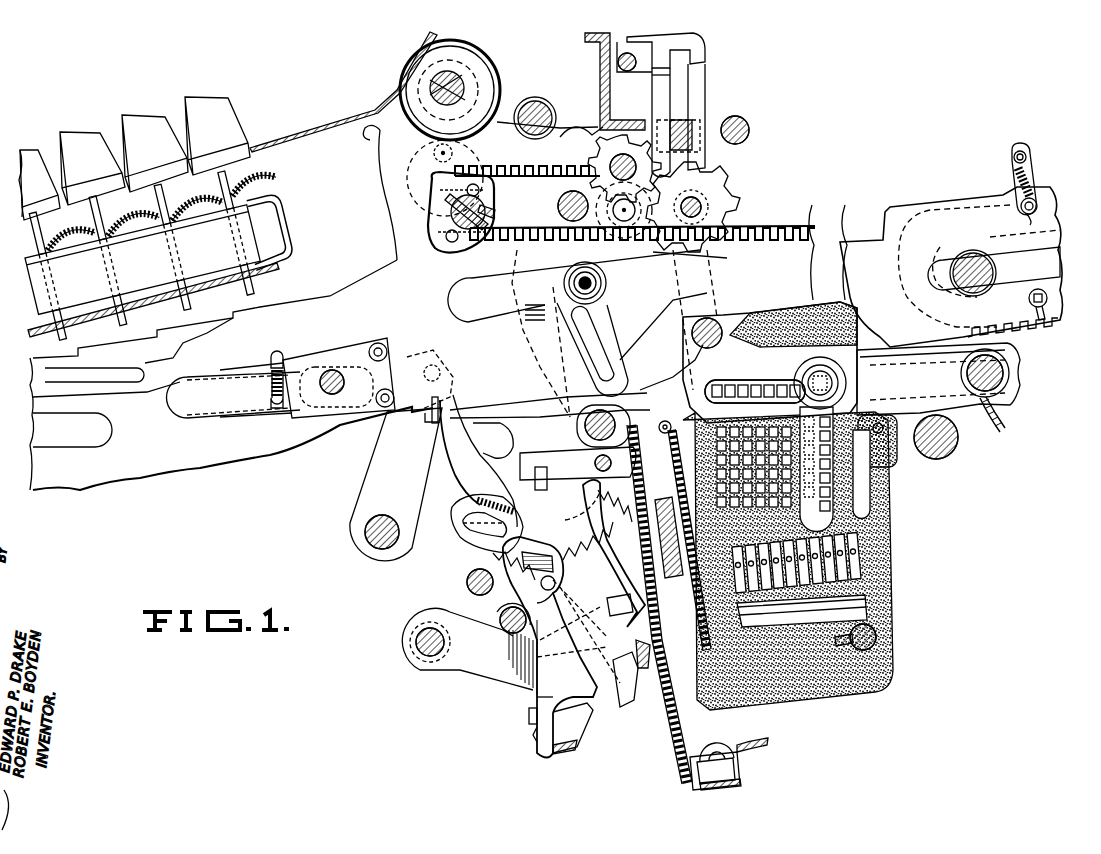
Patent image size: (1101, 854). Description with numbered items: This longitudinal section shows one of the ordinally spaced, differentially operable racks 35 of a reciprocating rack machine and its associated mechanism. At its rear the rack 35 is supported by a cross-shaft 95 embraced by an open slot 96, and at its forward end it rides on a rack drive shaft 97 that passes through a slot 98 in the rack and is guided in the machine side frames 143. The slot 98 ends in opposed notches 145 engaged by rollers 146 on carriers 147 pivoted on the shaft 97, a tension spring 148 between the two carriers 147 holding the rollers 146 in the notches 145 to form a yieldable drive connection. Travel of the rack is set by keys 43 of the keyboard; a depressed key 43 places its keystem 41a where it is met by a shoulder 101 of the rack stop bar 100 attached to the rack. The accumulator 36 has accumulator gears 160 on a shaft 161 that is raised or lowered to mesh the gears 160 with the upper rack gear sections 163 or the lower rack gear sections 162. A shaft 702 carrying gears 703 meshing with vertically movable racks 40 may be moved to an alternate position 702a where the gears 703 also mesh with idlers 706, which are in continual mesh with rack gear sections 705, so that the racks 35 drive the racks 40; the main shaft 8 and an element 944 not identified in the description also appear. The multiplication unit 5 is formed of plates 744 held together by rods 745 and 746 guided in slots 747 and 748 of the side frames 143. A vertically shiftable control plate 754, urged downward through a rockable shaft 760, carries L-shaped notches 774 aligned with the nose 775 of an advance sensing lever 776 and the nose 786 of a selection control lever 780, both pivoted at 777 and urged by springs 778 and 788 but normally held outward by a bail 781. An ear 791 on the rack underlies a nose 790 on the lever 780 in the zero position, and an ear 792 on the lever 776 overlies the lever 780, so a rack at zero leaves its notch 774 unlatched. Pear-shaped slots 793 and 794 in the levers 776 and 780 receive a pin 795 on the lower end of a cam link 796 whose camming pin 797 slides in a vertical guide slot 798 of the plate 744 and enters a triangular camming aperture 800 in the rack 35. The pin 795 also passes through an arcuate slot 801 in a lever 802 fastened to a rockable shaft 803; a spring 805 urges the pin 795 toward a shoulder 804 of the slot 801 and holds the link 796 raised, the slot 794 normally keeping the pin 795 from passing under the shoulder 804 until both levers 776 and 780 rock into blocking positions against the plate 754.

The key 43 is at (30, 150).
The keystem 41a is at (240, 170).
The shoulder 101 is at (150, 331).
The rack stop bar 100 is at (36, 365).
The slot 98 is at (228, 415).
The accumulator gear 160 is at (435, 232).
The shaft 161 is at (485, 205).
The accumulator 36 is at (490, 205).
The alternate position 702a is at (615, 238).
The shaft 702 is at (605, 172).
The rack gear section 705 is at (726, 200).
The idler 706 is at (720, 185).
The rack 40 is at (705, 46).
The upper rack gear section 163 is at (578, 130).
The gear 703 is at (650, 127).
The rack 35 is at (858, 243).
The cross-shaft 95 is at (952, 255).
The rack teeth 944 is at (960, 336).
The open slot 96 is at (1052, 208).
The rod 745 is at (1022, 383).
The guide slot 747 is at (1020, 368).
The machine side frame 143 is at (1010, 405).
The main shaft 8 is at (958, 443).
The control plate 754 is at (757, 506).
The L-shaped notch 774 is at (632, 673).
The nose 775 is at (660, 690).
The plate 744 is at (675, 414).
The triangular camming aperture 800 is at (645, 328).
The rod 746 is at (585, 438).
The multiplication unit 5 is at (568, 426).
The pivot 777 is at (578, 468).
The cam link 796 is at (528, 303).
The vertical guide slot 798 is at (606, 308).
The camming pin 797 is at (606, 283).
The lower rack gear section 162 is at (528, 285).
The rack drive shaft 97 is at (348, 415).
The notch 145 is at (388, 345).
The roller 146 is at (432, 370).
The carrier 147 is at (285, 360).
The tension spring 148 is at (270, 388).
The nose 790 is at (455, 385).
The guide slot 748 is at (440, 405).
The ear 791 is at (430, 425).
The spring 788 is at (450, 503).
The selection control lever 780 is at (497, 492).
The advance sensing lever 776 is at (529, 722).
The ear 792 is at (533, 738).
The pear-shaped slot 793 is at (535, 703).
The pear-shaped slot 794 is at (522, 665).
The bail 781 is at (583, 740).
The lever 802 is at (462, 675).
The rockable shaft 803 is at (415, 652).
The arcuate slot 801 is at (470, 530).
The spring 778 is at (495, 553).
The rockable shaft 760 is at (467, 580).
The pin 795 is at (501, 616).
The shoulder 804 is at (583, 526).
The spring 805 is at (614, 553).
The nose 786 is at (618, 605).